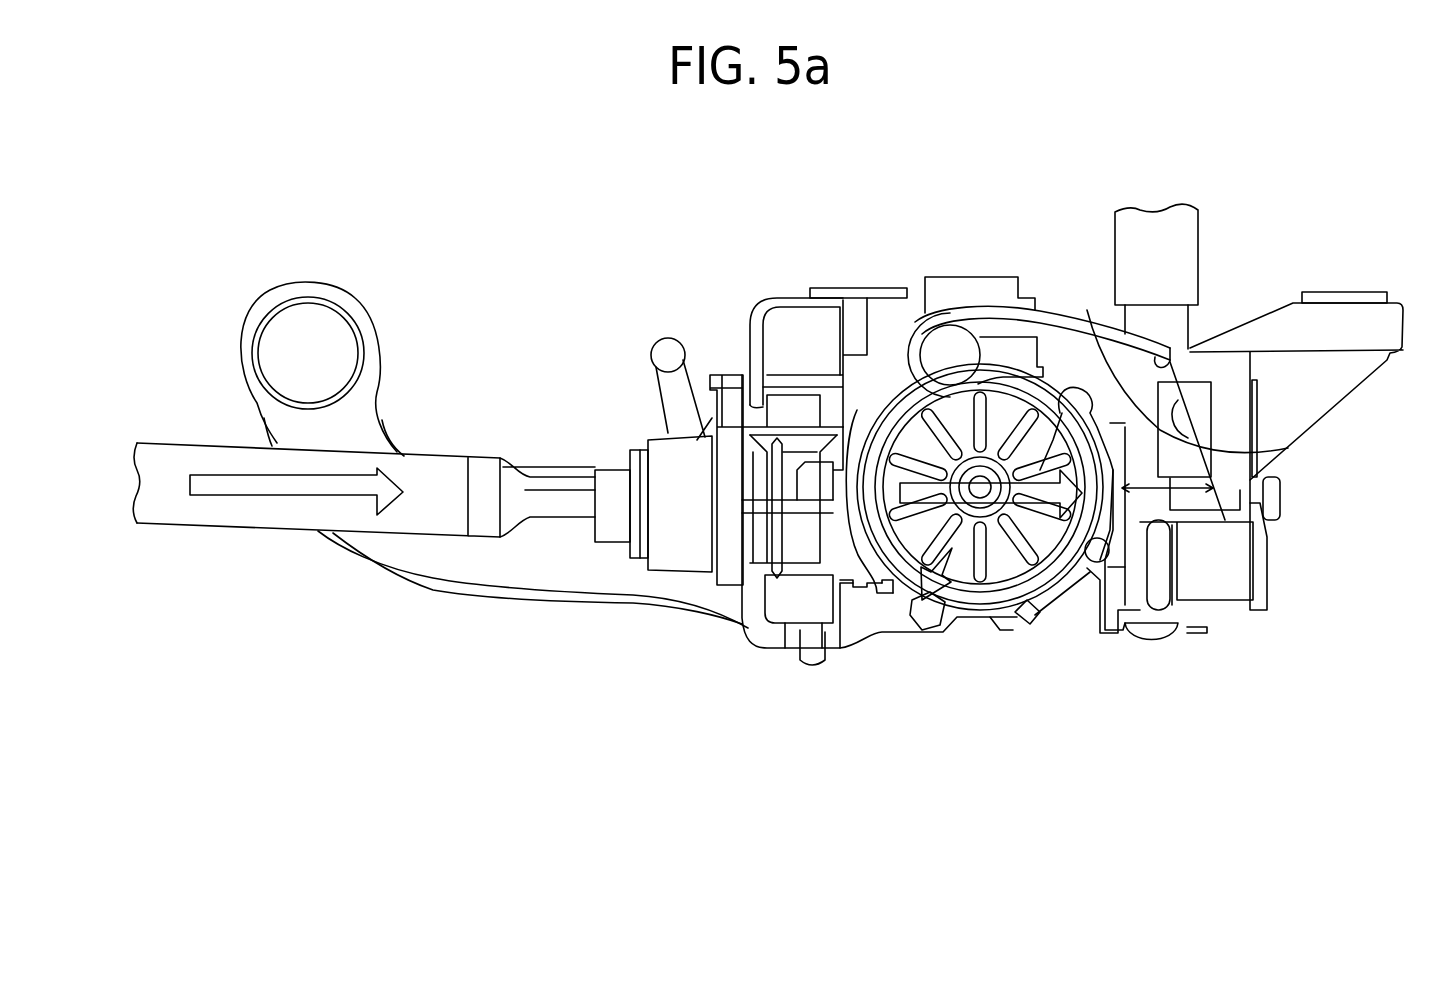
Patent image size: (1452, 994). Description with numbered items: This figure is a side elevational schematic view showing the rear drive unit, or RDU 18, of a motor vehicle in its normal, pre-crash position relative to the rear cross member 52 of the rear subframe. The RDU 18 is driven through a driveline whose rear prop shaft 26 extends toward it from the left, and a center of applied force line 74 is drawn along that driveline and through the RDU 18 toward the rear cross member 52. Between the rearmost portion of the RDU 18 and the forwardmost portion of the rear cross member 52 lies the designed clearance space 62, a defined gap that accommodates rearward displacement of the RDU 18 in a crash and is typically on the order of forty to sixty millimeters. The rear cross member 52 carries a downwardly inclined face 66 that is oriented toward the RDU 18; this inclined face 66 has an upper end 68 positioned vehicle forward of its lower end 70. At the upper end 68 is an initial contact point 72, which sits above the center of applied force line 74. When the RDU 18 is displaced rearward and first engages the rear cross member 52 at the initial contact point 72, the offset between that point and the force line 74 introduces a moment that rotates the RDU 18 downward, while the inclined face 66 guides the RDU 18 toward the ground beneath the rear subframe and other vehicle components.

The rear prop shaft 26 is at (432, 482).
The center of applied force line 74 is at (268, 488).
The RDU 18 is at (988, 600).
The inclined face 66 is at (1100, 345).
The upper end 68 is at (1170, 361).
The rear cross member 52 is at (1208, 403).
The initial contact point 72 is at (1175, 400).
The lower end 70 is at (1250, 480).
The designed clearance space 62 is at (1145, 495).